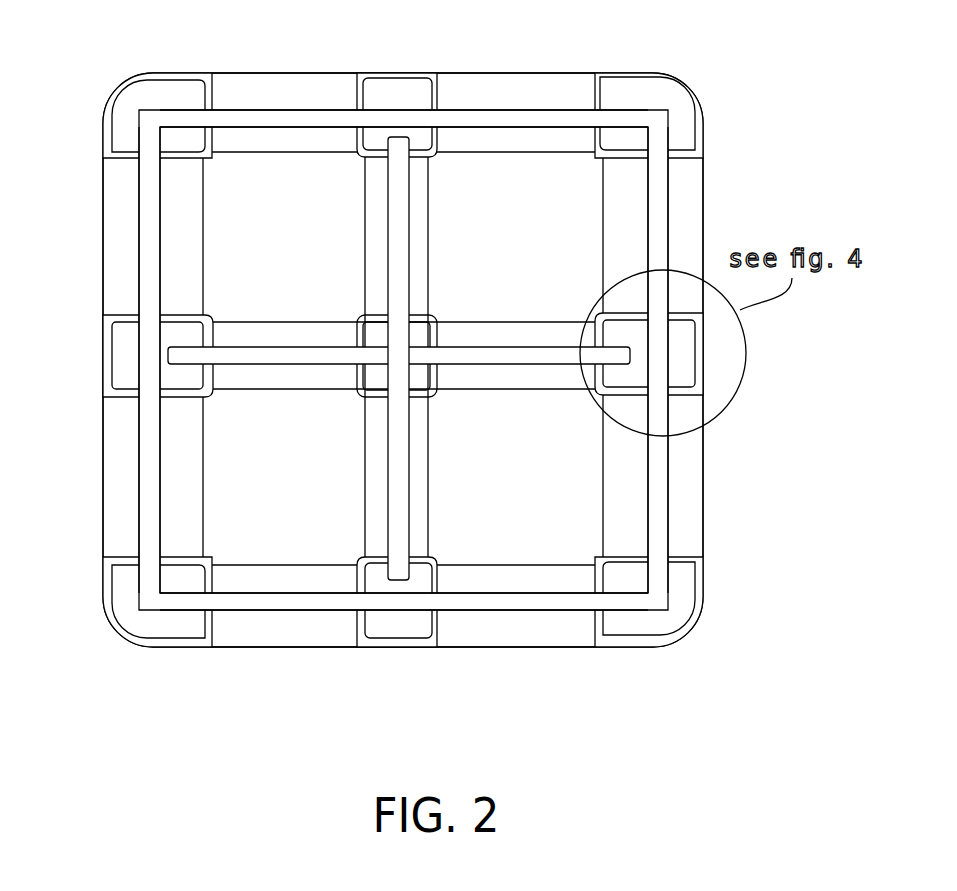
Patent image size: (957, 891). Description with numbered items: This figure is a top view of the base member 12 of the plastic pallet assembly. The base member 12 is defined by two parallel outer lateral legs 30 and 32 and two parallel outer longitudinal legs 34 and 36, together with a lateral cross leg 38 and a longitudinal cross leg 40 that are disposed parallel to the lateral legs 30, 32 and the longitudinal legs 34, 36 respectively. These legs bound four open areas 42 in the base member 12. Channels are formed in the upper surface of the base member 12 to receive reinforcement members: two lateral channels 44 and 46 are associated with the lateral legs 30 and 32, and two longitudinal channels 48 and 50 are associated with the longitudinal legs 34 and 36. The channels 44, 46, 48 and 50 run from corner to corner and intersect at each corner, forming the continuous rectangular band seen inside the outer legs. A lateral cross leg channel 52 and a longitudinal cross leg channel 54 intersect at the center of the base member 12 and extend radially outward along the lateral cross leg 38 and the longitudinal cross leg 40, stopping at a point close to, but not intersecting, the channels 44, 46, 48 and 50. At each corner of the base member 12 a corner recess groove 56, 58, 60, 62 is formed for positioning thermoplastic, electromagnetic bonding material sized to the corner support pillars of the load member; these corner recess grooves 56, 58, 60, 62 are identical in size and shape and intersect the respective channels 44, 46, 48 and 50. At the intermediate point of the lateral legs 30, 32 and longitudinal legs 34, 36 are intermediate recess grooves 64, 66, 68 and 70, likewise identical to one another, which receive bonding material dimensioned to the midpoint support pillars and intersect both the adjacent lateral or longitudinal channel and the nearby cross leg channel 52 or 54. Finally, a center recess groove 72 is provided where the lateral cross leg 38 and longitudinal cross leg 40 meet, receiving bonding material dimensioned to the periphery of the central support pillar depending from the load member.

The base member 12 is at (100, 90).
The outer lateral leg 30 is at (300, 95).
The outer lateral leg 32 is at (305, 628).
The outer longitudinal leg 34 is at (125, 282).
The outer longitudinal leg 36 is at (680, 222).
The lateral cross leg 38 is at (317, 377).
The longitudinal cross leg 40 is at (377, 210).
The open areas 42 is at (247, 245).
The lateral channel 44 is at (478, 118).
The lateral channel 46 is at (505, 600).
The longitudinal channel 48 is at (148, 433).
The longitudinal channel 50 is at (655, 445).
The lateral cross leg channel 52 is at (310, 353).
The longitudinal cross leg channel 54 is at (400, 438).
The corner recess groove 56 is at (152, 92).
The corner recess groove 58 is at (640, 90).
The corner recess groove 60 is at (668, 617).
The corner recess groove 62 is at (133, 617).
The intermediate recess groove 64 is at (395, 90).
The intermediate recess groove 66 is at (680, 362).
The intermediate recess groove 68 is at (425, 648).
The intermediate recess groove 70 is at (120, 336).
The center recess groove 72 is at (433, 317).